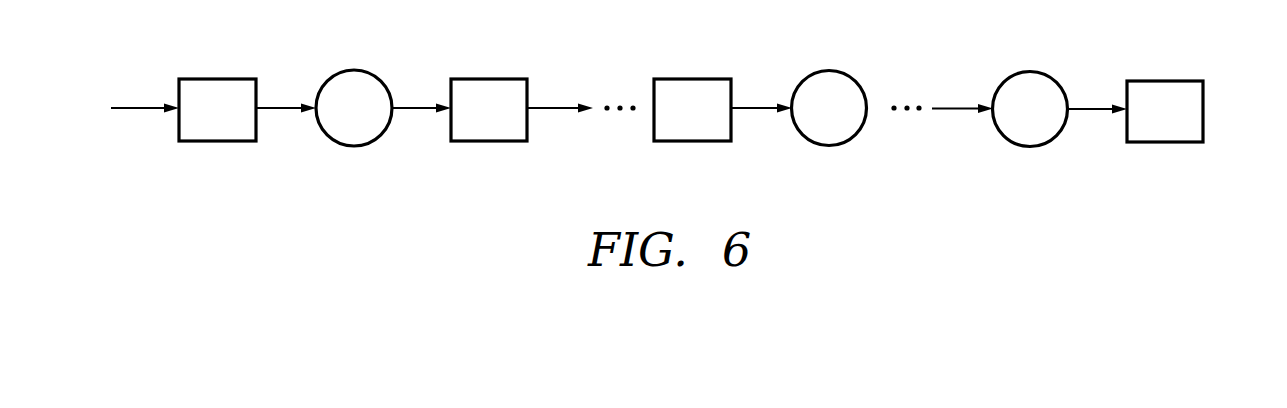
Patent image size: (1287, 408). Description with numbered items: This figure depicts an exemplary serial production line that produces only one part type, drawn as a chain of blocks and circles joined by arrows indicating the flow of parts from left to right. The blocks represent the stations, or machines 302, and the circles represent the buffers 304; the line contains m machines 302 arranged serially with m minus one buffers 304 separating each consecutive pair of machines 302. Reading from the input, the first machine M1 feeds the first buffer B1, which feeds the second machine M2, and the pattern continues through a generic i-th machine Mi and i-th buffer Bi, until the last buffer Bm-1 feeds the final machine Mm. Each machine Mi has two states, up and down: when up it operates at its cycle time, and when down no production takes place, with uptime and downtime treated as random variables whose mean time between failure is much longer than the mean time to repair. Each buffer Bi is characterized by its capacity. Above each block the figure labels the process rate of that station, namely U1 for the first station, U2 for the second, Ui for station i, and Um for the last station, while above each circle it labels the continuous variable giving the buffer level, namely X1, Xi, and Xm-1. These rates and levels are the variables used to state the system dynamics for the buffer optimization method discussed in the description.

The machines 302 is at (711, 113).
The buffers 304 is at (720, 112).
The first machine M1 is at (217, 110).
The second machine M2 is at (489, 110).
The i-th machine Mi is at (692, 110).
The m-th machine Mm is at (1165, 111).
The first buffer B1 is at (354, 108).
The i-th buffer Bi is at (829, 108).
The (m-1)-th buffer Bm-1 is at (1030, 109).
The process rate of station 1 U1 is at (216, 52).
The process rate of station 2 U2 is at (488, 52).
The process rate of station i Ui is at (689, 52).
The process rate of station m Um is at (1166, 52).
The level of buffer 1 X1 is at (352, 52).
The level of buffer i Xi is at (824, 52).
The level of buffer m-1 Xm-1 is at (1039, 52).